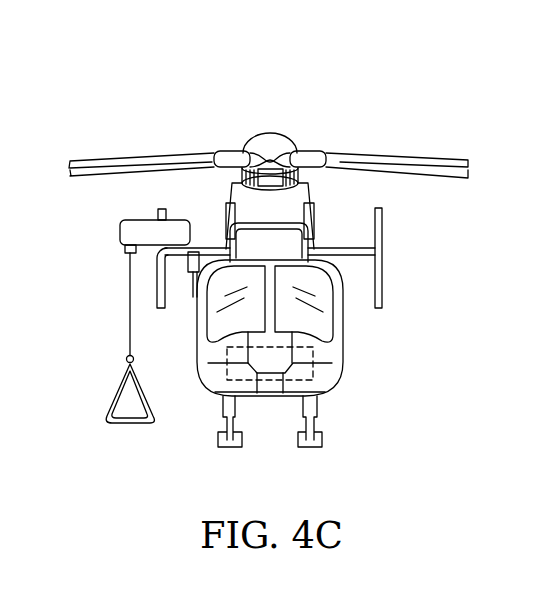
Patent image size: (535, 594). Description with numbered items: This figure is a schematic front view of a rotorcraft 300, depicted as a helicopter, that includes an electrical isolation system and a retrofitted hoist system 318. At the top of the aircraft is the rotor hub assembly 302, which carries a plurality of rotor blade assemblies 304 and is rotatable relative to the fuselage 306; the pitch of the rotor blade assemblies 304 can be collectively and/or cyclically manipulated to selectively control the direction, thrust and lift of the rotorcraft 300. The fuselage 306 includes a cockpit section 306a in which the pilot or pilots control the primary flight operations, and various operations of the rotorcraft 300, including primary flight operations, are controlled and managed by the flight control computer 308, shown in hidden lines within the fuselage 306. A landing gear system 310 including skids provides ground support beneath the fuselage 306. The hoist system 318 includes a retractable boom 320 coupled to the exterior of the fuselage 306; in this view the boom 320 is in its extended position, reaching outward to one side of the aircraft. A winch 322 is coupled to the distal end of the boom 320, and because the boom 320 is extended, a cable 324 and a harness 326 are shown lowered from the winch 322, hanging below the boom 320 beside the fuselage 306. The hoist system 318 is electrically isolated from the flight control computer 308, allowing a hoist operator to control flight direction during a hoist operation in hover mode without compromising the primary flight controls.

The rotorcraft 300 is at (348, 100).
The rotor hub assembly 302 is at (279, 133).
The rotor blade assemblies 304 is at (433, 158).
The fuselage 306 is at (337, 378).
The cockpit section 306a is at (318, 324).
The flight control computer 308 is at (300, 347).
The landing gear system 310 is at (318, 447).
The hoist system 318 is at (142, 206).
The retractable boom 320 is at (148, 258).
The winch 322 is at (118, 232).
The cable 324 is at (129, 313).
The harness 326 is at (128, 421).